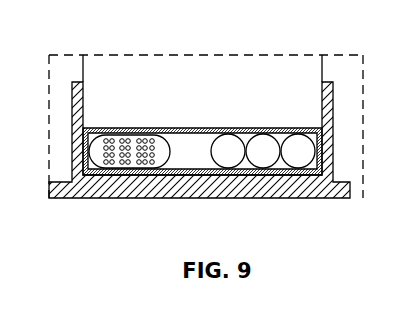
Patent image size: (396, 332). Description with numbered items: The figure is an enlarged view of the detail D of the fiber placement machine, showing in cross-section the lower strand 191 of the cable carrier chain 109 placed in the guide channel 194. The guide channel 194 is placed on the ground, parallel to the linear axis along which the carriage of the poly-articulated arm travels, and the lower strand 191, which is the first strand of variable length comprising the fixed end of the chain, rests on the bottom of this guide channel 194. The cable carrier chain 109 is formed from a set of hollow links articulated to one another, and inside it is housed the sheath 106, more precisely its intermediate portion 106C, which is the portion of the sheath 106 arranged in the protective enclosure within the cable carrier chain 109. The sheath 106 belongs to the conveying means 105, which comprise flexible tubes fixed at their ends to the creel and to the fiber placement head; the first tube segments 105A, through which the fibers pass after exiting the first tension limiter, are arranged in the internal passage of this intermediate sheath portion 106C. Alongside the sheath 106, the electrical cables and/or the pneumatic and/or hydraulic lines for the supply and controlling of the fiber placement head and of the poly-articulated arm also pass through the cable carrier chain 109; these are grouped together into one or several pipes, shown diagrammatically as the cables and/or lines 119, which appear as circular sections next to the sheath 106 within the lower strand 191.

The detail D is at (49, 85).
The sheath 106 is at (97, 129).
The intermediate portion 106C is at (157, 128).
The lower strand 191 is at (194, 128).
The guide channel 194 is at (72, 131).
The conveying means 105 is at (109, 172).
The first tube segments 105A is at (136, 170).
The cable carrier chain 109 is at (240, 129).
The cables and/or lines 119 is at (296, 142).